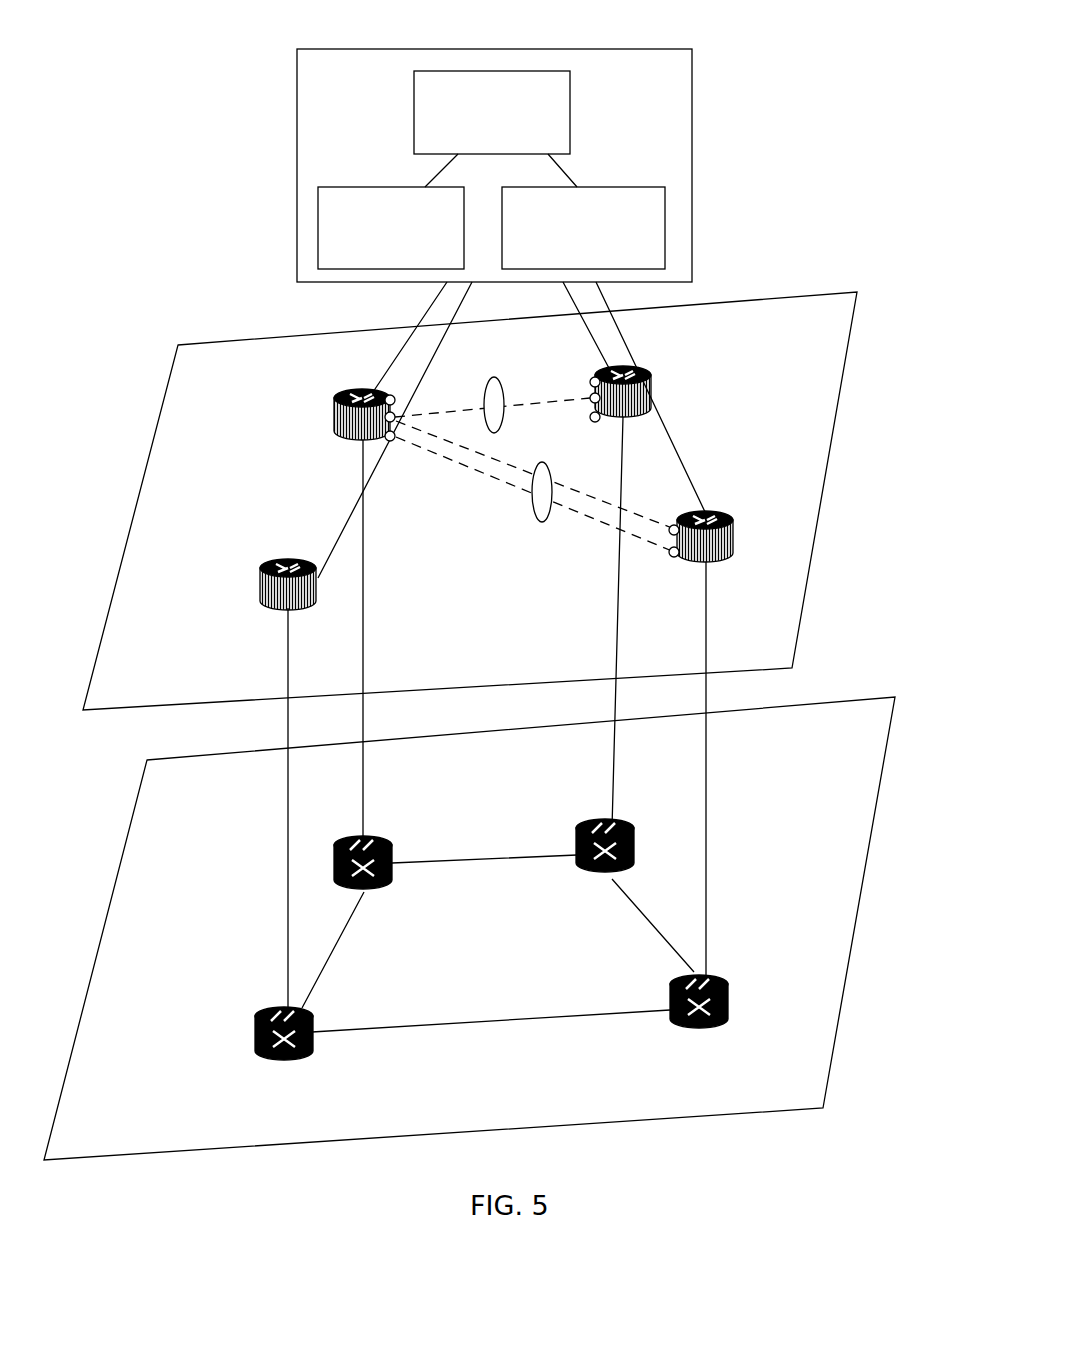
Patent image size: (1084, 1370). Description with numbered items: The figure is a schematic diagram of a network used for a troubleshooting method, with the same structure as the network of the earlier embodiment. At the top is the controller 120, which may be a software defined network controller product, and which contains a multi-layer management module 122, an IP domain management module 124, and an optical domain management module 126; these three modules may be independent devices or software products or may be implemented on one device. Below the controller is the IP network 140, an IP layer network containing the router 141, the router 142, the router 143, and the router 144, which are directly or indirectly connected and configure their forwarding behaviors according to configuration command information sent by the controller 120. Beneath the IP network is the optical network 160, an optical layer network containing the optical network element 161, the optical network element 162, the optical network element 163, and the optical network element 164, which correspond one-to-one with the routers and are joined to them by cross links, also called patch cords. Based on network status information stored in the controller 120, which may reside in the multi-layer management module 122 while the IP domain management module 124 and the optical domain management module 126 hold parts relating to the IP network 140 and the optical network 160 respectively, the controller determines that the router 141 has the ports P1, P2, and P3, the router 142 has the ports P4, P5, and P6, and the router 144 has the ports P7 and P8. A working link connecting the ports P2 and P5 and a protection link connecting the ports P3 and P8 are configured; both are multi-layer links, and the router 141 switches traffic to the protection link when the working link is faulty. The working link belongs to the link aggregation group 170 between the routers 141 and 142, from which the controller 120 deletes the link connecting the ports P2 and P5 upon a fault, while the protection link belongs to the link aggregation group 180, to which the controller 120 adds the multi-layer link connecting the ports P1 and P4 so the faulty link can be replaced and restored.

The controller 120 is at (625, 49).
The multi-layer management module 122 is at (500, 71).
The IP domain management module 124 is at (464, 205).
The optical domain management module 126 is at (665, 210).
The IP network 140 is at (855, 310).
The router 141 is at (338, 397).
The router 142 is at (650, 378).
The router 143 is at (265, 568).
The router 144 is at (728, 518).
The optical network 160 is at (890, 740).
The optical network element 161 is at (338, 843).
The optical network element 162 is at (632, 836).
The optical network element 163 is at (255, 1012).
The optical network element 164 is at (730, 985).
The link aggregation group 170 is at (497, 378).
The link aggregation group 180 is at (537, 522).
The port P1 is at (400, 387).
The port P2 is at (415, 406).
The port P3 is at (399, 452).
The port P4 is at (582, 372).
The port P5 is at (582, 391).
The port P6 is at (582, 423).
The port P7 is at (667, 514).
The port P8 is at (665, 567).